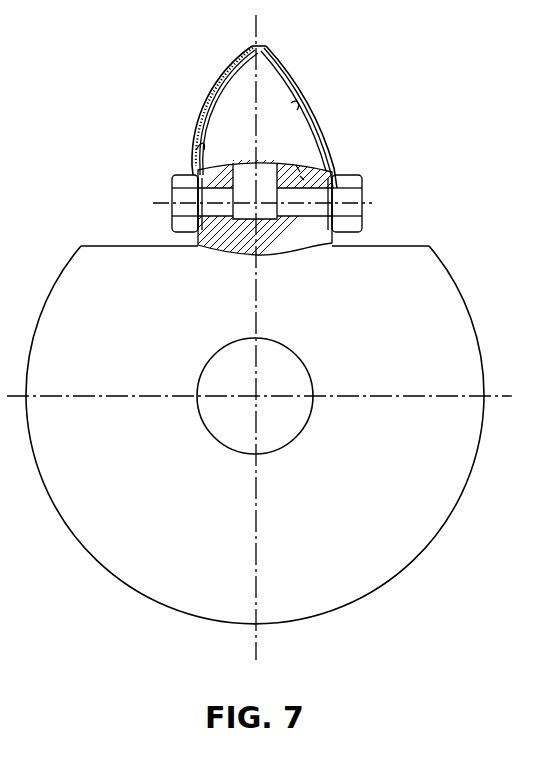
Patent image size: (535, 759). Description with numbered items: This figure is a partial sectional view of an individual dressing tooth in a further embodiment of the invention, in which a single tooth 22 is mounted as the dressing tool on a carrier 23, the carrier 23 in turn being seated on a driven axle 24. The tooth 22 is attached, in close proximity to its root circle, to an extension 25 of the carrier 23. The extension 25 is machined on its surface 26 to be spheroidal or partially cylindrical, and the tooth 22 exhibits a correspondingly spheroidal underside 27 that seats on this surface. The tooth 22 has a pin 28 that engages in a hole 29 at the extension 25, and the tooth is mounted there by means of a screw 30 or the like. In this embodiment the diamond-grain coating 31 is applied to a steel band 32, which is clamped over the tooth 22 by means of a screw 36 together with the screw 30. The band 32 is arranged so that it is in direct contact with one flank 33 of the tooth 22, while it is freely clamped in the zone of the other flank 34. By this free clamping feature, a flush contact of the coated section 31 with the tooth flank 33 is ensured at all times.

The tooth 22 is at (270, 88).
The carrier 23 is at (450, 482).
The driven axle 24 is at (283, 423).
The extension 25 is at (340, 244).
The surface 26 is at (327, 167).
The underside 27 is at (298, 168).
The pin 28 is at (247, 213).
The hole 29 is at (300, 175).
The screw 30 is at (366, 205).
The diamond-grain coating 31 is at (199, 103).
The steel band 32 is at (220, 68).
The flank 33 is at (199, 146).
The other flank 34 is at (296, 108).
The screw 36 is at (173, 190).